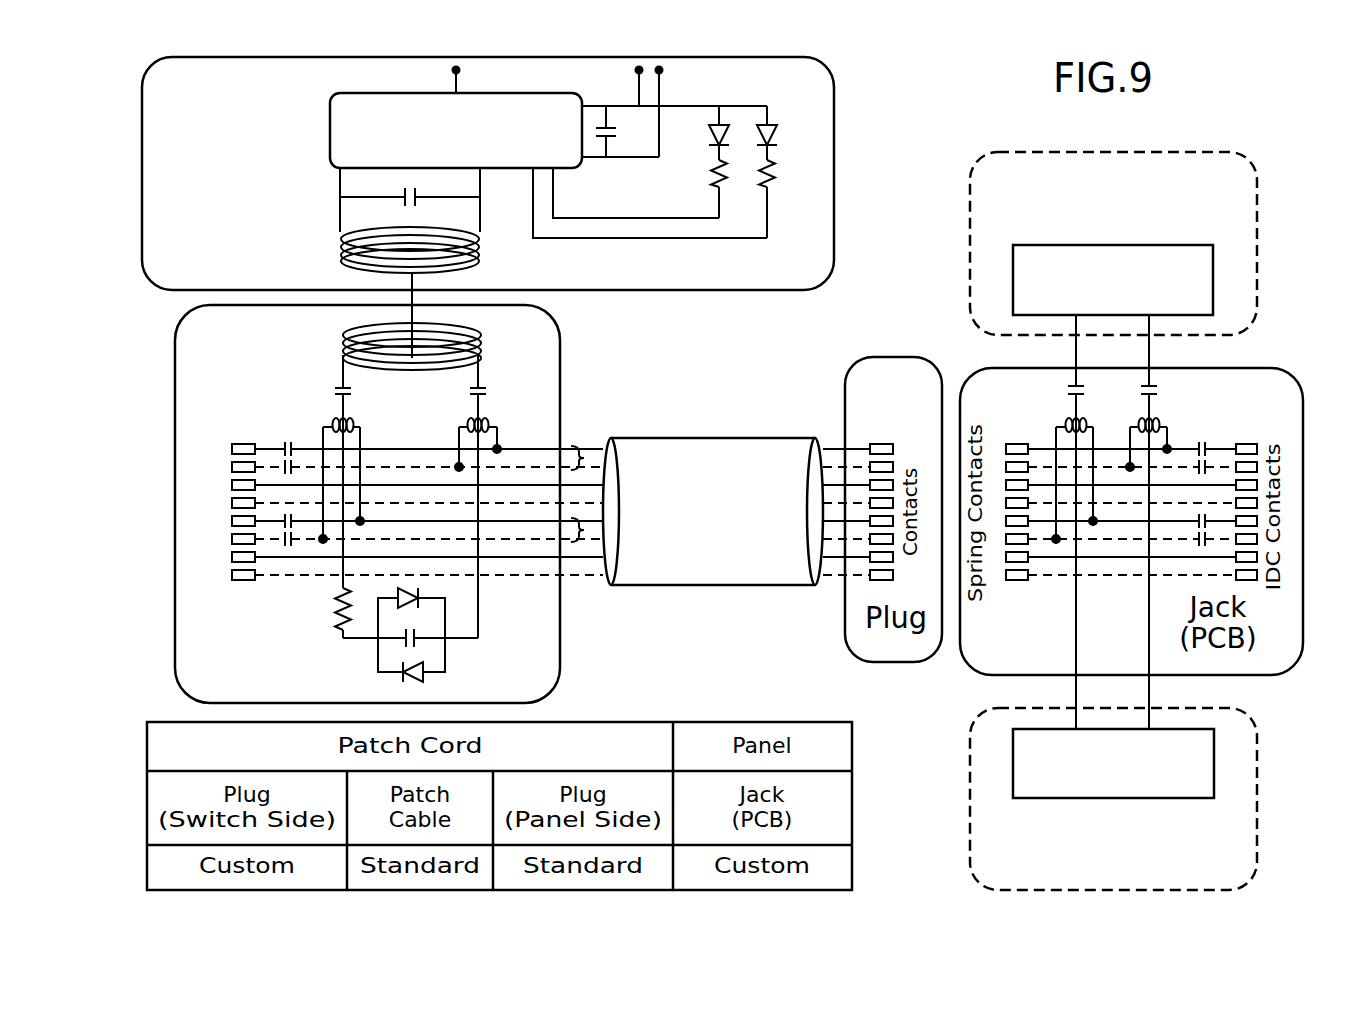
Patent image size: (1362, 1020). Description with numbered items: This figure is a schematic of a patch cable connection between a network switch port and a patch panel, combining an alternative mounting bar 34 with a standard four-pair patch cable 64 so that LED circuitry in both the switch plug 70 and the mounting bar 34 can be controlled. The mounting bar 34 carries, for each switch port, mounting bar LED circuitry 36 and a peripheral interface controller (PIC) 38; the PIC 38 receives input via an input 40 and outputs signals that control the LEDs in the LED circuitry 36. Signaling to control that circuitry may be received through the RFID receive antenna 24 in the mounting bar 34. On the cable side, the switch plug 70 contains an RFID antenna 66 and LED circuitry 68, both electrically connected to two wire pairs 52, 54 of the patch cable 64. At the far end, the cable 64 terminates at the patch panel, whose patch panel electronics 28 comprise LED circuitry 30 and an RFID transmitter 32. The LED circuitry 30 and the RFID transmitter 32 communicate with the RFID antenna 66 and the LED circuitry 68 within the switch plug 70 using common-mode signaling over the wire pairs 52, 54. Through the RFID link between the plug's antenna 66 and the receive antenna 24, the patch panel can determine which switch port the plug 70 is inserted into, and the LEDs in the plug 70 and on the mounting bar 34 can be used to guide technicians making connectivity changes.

The RFID receive antenna 24 is at (480, 253).
The patch panel electronics 28 is at (1257, 217).
The LED circuitry 30 is at (1013, 742).
The RFID transmitter 32 is at (1213, 285).
The mounting bar 34 is at (834, 180).
The mounting bar LED circuitry 36 is at (805, 99).
The peripheral interface controller 38 is at (330, 150).
The input 40 is at (456, 70).
The wire pair 52 is at (578, 446).
The wire pair 54 is at (578, 542).
The four-pair patch cable 64 is at (706, 399).
The RFID antenna 66 is at (343, 352).
The LED circuitry 68 is at (513, 653).
The switch plug 70 is at (561, 354).